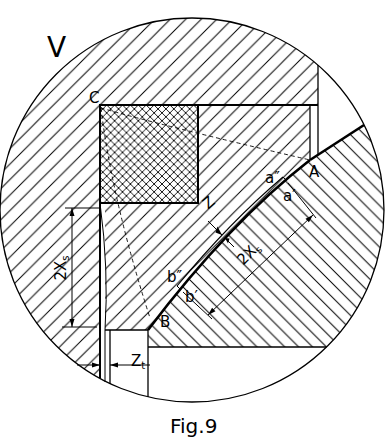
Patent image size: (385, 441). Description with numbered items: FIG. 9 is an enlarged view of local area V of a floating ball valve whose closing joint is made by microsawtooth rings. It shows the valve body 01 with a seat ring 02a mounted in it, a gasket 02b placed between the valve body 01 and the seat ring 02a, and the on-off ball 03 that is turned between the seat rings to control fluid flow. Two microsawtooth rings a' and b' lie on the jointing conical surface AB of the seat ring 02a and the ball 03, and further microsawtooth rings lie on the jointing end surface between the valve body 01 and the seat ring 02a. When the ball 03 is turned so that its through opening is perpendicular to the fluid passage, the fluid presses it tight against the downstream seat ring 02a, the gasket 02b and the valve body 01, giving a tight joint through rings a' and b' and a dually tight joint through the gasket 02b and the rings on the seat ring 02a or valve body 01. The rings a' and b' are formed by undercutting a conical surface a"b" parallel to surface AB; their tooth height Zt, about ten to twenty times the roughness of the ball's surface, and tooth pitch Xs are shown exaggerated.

The valve body 01 is at (159, 210).
The seat ring 02a is at (205, 251).
The gasket 02b is at (149, 154).
The on-off ball 03 is at (266, 226).